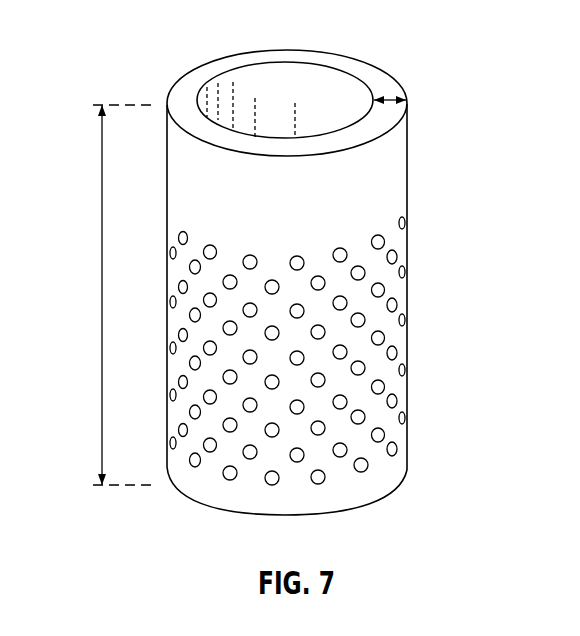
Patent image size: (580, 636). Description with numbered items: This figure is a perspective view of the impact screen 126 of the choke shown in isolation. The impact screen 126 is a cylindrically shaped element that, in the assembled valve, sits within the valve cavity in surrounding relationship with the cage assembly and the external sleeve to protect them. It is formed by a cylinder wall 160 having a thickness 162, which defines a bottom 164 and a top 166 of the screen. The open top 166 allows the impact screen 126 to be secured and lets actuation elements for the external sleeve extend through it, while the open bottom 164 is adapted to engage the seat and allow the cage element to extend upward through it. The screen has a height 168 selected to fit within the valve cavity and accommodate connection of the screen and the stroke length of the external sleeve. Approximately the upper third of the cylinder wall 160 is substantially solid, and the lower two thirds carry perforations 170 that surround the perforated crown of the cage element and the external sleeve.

The impact screen 126 is at (278, 292).
The cylinder wall 160 is at (384, 190).
The thickness 162 is at (396, 99).
The bottom 164 is at (203, 521).
The top 166 is at (223, 55).
The height 168 is at (101, 326).
The perforations 170 is at (368, 466).